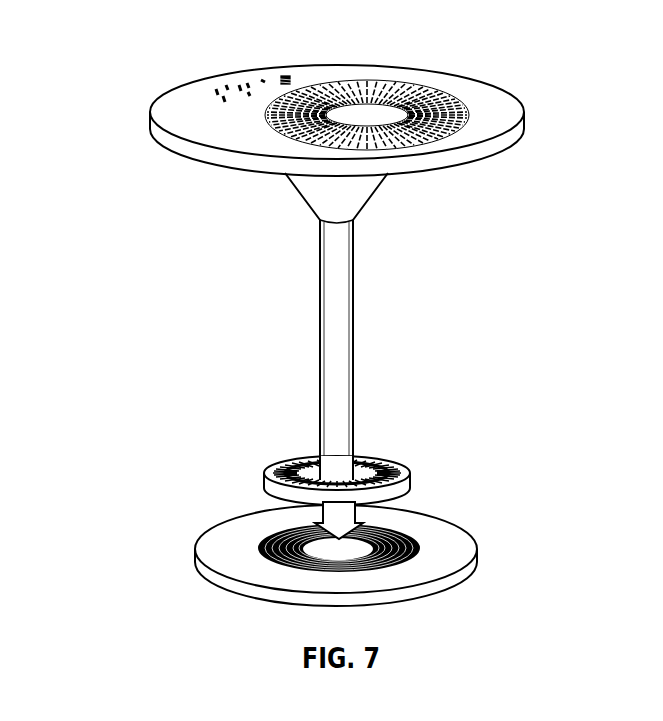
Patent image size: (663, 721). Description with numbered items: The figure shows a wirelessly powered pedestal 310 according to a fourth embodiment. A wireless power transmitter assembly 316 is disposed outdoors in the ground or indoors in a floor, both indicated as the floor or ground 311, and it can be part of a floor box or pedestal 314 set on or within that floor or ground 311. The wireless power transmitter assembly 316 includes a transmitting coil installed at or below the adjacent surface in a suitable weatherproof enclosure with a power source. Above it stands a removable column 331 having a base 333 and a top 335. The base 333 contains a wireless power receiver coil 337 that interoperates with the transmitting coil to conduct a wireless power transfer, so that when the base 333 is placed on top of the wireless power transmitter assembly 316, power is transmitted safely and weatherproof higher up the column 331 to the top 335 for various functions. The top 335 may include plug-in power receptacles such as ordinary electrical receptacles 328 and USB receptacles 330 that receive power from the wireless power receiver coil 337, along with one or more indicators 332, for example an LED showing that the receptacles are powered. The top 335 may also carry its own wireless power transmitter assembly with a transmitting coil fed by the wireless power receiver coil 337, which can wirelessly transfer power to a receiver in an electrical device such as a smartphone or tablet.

The wireless charging system 310 is at (118, 33).
The floor or ground 311 is at (574, 590).
The floor box or pedestal 314 is at (460, 548).
The wireless power transmitter assembly 316 is at (440, 540).
The electrical receptacles 328 is at (217, 86).
The USB receptacles 330 is at (285, 76).
The removable column 331 is at (383, 259).
The indicators 332 is at (263, 81).
The base 333 is at (270, 488).
The top 335 is at (463, 86).
The wireless power receiver coil 337 is at (404, 468).